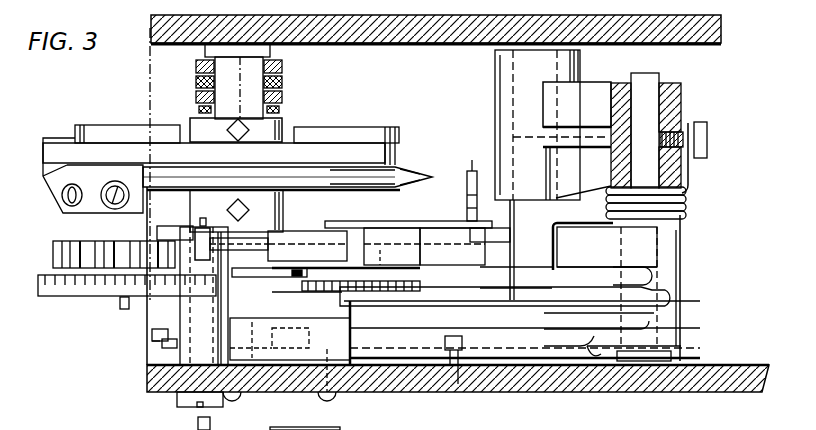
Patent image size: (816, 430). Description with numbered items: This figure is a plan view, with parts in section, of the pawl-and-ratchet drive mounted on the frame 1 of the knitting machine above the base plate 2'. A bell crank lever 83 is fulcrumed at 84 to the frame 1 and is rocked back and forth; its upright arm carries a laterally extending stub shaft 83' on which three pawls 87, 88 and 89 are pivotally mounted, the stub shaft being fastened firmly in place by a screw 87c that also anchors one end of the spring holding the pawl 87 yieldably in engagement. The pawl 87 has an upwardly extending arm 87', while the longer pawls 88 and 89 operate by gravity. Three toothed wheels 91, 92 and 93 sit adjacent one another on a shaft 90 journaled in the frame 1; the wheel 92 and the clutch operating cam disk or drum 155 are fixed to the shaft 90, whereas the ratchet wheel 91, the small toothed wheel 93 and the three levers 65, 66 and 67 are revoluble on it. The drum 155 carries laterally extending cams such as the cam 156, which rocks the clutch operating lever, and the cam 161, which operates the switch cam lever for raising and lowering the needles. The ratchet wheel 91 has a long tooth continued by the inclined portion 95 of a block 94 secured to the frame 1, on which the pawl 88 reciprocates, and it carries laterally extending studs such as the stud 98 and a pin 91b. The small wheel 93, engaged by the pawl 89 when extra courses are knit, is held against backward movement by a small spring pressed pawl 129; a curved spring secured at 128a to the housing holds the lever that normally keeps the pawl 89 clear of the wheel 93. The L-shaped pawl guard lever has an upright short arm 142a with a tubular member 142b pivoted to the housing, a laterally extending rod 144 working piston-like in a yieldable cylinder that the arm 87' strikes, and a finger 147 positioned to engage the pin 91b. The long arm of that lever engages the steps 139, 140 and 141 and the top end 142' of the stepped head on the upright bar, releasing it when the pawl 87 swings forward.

The frame 1 is at (435, 36).
The base plate 2' is at (143, 164).
The lever 65 is at (272, 70).
The lever 66 is at (273, 81).
The lever 67 is at (273, 100).
The bell crank lever 83 is at (562, 114).
The stub shaft 83' is at (639, 135).
The fulcrum 84 is at (529, 50).
The pawl 87 is at (638, 242).
The arm of pawl 87' is at (376, 248).
The screw 87c is at (708, 131).
The pawl 88 is at (505, 297).
The pawl 89 is at (612, 337).
The shaft 90 is at (228, 92).
The ratchet wheel 91 is at (62, 288).
The pin 91b is at (297, 271).
The toothed wheel 92 is at (87, 254).
The toothed wheel 93 is at (173, 347).
The block 94 is at (337, 339).
The inclined portion 95 is at (297, 307).
The stud 98 is at (121, 306).
The spring attachment point 128a is at (457, 386).
The spring pressed pawl 129 is at (157, 342).
The step 139 is at (475, 250).
The step 140 is at (474, 222).
The step 141 is at (467, 205).
The top end of stepped head 142' is at (464, 157).
The upright short arm 142a is at (200, 240).
The tubular member 142b is at (195, 309).
The rod 144 is at (232, 429).
The finger 147 is at (350, 313).
The cam disk or drum 155 is at (318, 148).
The cam 156 is at (65, 158).
The cam 161 is at (112, 128).